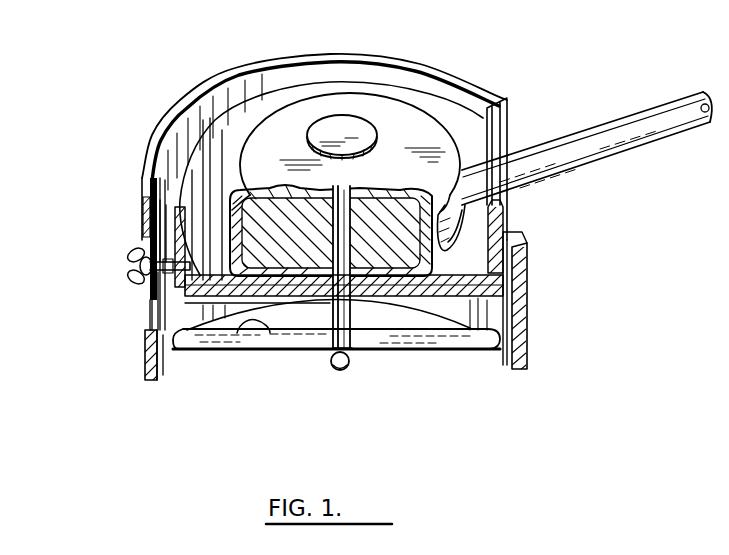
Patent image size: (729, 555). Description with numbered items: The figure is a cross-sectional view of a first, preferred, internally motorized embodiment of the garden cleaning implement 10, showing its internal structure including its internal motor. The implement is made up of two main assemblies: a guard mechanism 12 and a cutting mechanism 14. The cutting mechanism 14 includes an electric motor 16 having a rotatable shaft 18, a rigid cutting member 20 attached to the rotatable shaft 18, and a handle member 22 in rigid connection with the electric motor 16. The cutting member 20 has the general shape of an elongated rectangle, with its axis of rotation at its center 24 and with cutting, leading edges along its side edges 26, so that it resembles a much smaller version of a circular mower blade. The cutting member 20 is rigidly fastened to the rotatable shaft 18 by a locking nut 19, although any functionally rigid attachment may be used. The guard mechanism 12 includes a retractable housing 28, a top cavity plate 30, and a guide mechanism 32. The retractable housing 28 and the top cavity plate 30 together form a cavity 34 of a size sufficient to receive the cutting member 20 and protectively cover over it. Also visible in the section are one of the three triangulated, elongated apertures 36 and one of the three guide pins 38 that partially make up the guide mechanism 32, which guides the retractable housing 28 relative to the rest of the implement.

The garden cleaning implement 10 is at (530, 303).
The guard mechanism 12 is at (148, 135).
The cutting mechanism 14 is at (354, 377).
The electric motor 16 is at (411, 134).
The rotatable shaft 18 is at (365, 333).
The locking nut 19 is at (358, 353).
The cutting member 20 is at (473, 338).
The handle member 22 is at (591, 150).
The center 24 is at (318, 346).
The side edges 26 is at (252, 323).
The retractable housing 28 is at (182, 117).
The top cavity plate 30 is at (148, 330).
The guide mechanism 32 is at (125, 269).
The cavity 34 is at (474, 384).
The elongated apertures 36 is at (150, 298).
The guide pins 38 is at (153, 235).